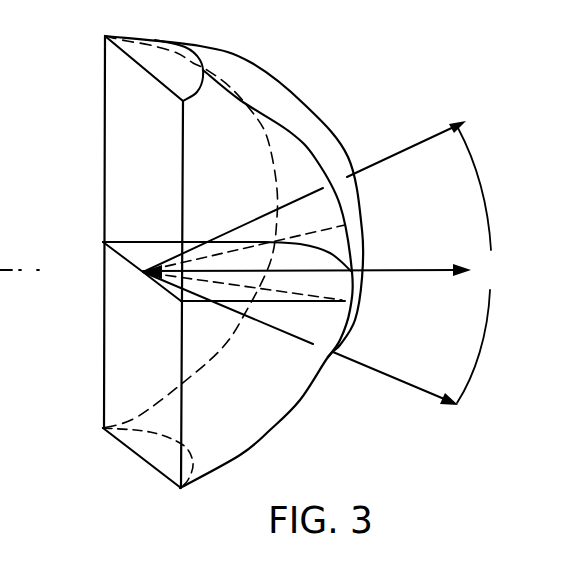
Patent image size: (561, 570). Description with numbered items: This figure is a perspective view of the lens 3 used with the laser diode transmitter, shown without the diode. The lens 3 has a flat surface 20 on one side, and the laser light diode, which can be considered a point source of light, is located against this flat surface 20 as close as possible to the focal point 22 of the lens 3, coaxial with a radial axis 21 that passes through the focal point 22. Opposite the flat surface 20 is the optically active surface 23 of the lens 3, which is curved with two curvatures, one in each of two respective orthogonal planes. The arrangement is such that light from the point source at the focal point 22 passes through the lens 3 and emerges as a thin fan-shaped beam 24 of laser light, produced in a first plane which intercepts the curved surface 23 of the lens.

The lens 3 is at (134, 153).
The flat surface 20 is at (115, 373).
The radial axis 21 is at (297, 303).
The focal point 22 is at (140, 274).
The optically active surface 23 is at (303, 112).
The fan-shaped beam 24 is at (324, 263).